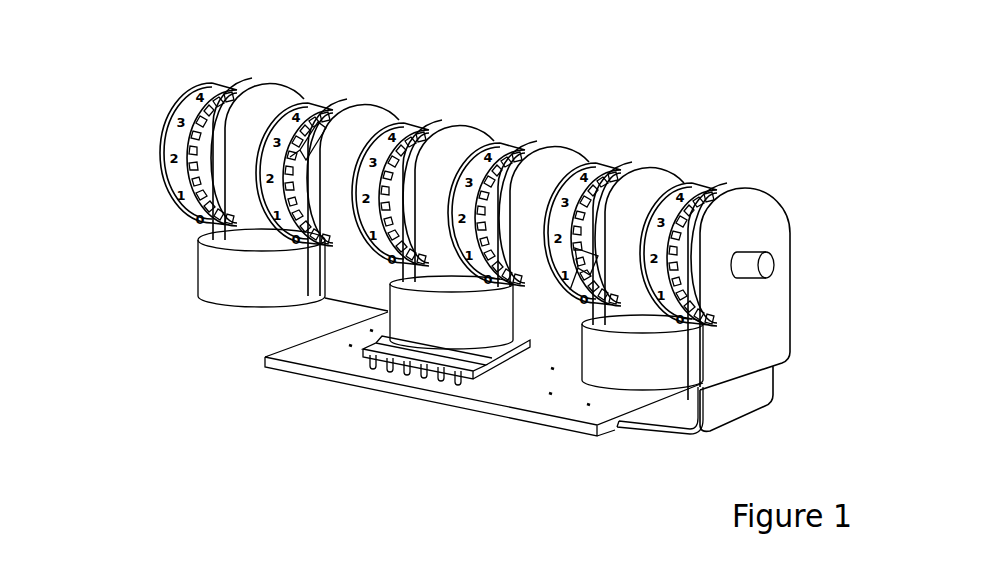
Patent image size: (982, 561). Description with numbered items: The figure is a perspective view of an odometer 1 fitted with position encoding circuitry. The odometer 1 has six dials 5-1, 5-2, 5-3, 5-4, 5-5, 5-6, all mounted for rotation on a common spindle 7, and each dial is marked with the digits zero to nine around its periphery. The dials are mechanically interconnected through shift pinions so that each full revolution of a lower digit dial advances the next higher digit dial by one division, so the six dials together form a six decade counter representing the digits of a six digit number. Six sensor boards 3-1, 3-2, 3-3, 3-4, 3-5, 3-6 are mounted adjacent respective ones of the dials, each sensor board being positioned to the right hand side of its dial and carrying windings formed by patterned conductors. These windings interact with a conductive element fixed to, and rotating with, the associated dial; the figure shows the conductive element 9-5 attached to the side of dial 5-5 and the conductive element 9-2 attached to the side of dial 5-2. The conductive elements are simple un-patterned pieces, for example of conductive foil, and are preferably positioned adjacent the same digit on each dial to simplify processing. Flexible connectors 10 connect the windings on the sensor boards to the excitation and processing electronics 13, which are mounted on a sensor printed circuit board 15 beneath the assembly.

The odometer 1 is at (218, 453).
The sensor board 3-1 is at (768, 195).
The sensor board 3-2 is at (667, 172).
The sensor board 3-3 is at (567, 152).
The sensor board 3-4 is at (470, 133).
The sensor board 3-5 is at (380, 118).
The sensor board 3-6 is at (283, 95).
The dial 5-1 is at (697, 183).
The dial 5-2 is at (600, 160).
The dial 5-3 is at (513, 143).
The dial 5-4 is at (413, 122).
The dial 5-5 is at (322, 108).
The dial 5-6 is at (221, 82).
The spindle 7 is at (774, 266).
The conductive element 9-2 is at (587, 310).
The conductive element 9-5 is at (312, 112).
The flexible connector 10 is at (200, 272).
The excitation and processing electronics 13 is at (477, 360).
The sensor printed circuit board 15 is at (525, 393).